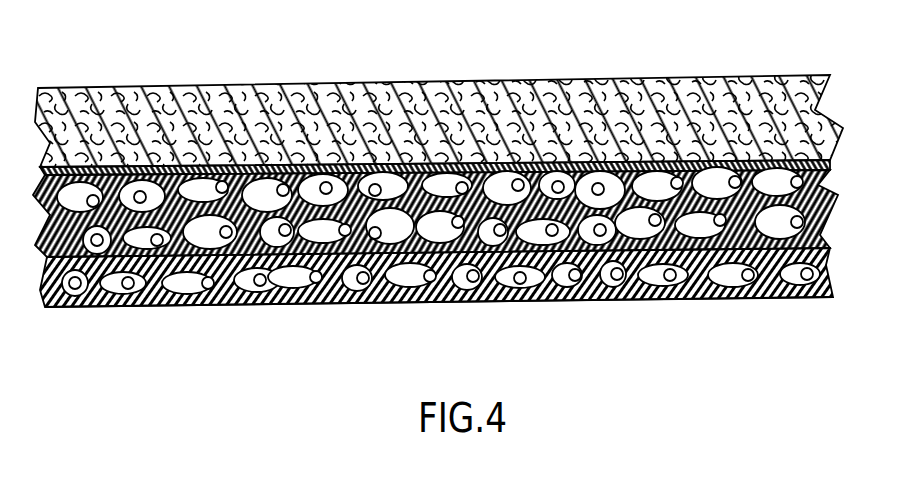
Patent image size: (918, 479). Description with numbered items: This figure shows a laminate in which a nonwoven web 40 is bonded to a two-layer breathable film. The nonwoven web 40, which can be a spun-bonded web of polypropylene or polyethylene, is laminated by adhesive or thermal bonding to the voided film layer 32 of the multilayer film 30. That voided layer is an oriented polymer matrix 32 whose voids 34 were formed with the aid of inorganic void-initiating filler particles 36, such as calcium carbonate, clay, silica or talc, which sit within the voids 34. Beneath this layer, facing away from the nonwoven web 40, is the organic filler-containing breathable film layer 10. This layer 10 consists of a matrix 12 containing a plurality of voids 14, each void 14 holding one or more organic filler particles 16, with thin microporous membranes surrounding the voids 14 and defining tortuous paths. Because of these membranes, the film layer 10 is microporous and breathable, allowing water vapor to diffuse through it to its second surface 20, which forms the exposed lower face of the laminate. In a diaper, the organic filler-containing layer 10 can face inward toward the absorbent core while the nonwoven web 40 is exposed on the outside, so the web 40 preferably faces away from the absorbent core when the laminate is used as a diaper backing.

The breathable film layer 10 is at (456, 189).
The matrix 12 is at (436, 307).
The voids 14 is at (498, 300).
The organic filler particles 16 is at (520, 288).
The second surface 20 is at (230, 302).
The multilayer film 30 is at (456, 134).
The oriented polymer matrix 32 is at (817, 166).
The voids 34 is at (577, 160).
The inorganic void-initiating filler particles 36 is at (598, 183).
The nonwoven web 40 is at (807, 98).